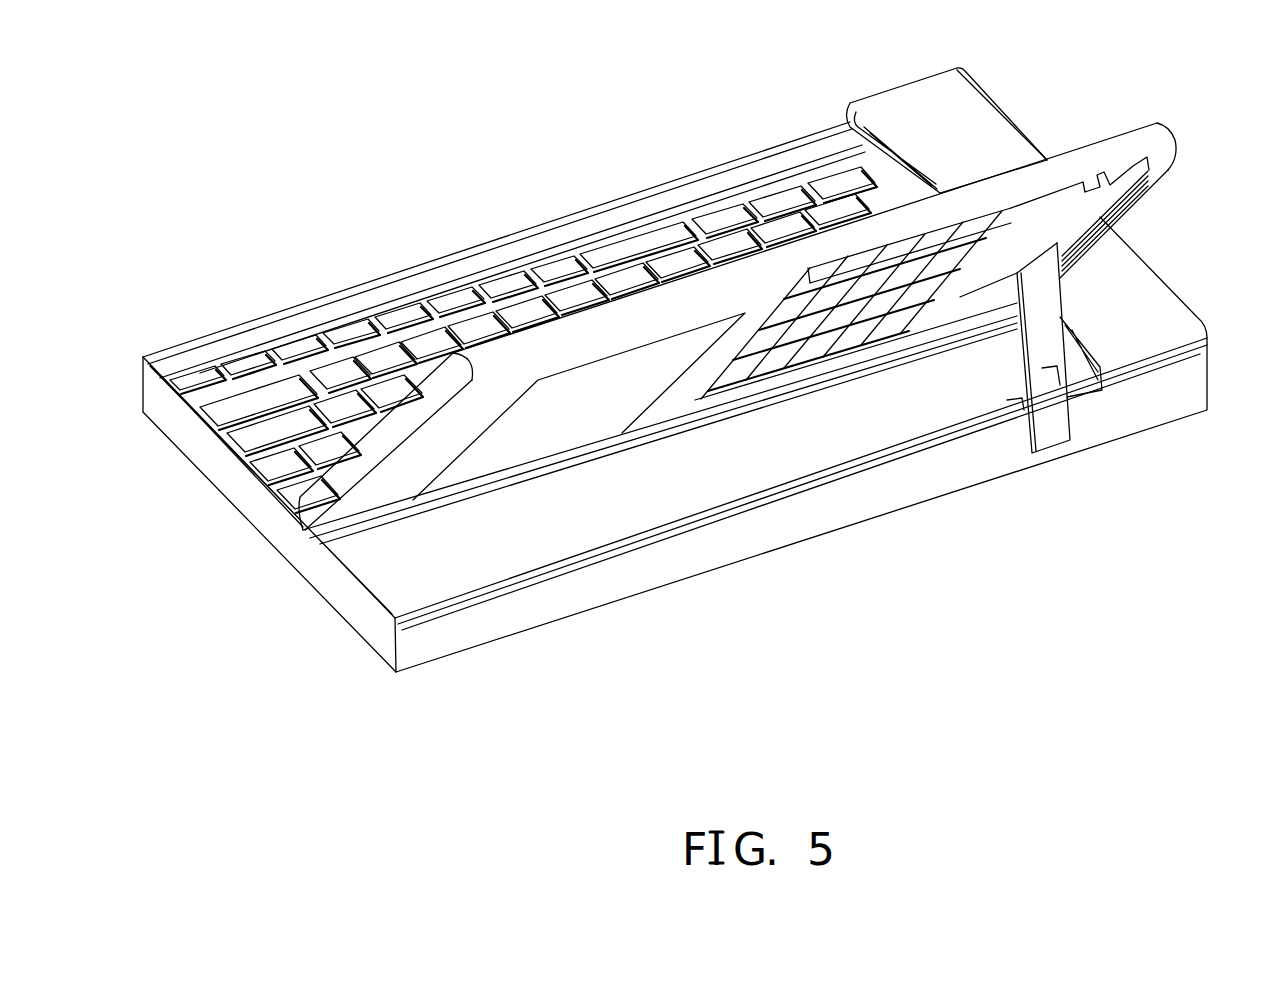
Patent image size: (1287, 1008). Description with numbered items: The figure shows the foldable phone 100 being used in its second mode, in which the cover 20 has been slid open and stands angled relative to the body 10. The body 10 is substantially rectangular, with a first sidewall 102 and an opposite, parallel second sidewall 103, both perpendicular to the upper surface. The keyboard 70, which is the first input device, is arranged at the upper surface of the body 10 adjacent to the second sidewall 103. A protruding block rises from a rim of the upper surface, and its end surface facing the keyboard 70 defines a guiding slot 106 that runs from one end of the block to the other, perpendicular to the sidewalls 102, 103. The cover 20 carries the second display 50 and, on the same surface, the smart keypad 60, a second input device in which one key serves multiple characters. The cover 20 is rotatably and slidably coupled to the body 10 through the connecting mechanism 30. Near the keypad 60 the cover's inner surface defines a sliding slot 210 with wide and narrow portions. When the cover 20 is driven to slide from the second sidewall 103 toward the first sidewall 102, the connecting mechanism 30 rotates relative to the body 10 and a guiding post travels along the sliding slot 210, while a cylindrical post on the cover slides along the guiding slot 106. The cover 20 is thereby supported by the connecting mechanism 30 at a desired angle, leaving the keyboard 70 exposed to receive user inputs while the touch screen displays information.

The foldable phone 100 is at (343, 148).
The body 10 is at (243, 497).
The second sidewall 103 is at (330, 295).
The first sidewall 102 is at (715, 538).
The guiding slot 106 is at (843, 123).
The keyboard 70 is at (468, 298).
The cover 20 is at (327, 500).
The second display 50 is at (535, 430).
The sliding slot 210 is at (1133, 127).
The smart keypad 60 is at (792, 363).
The connecting mechanism 30 is at (1052, 423).